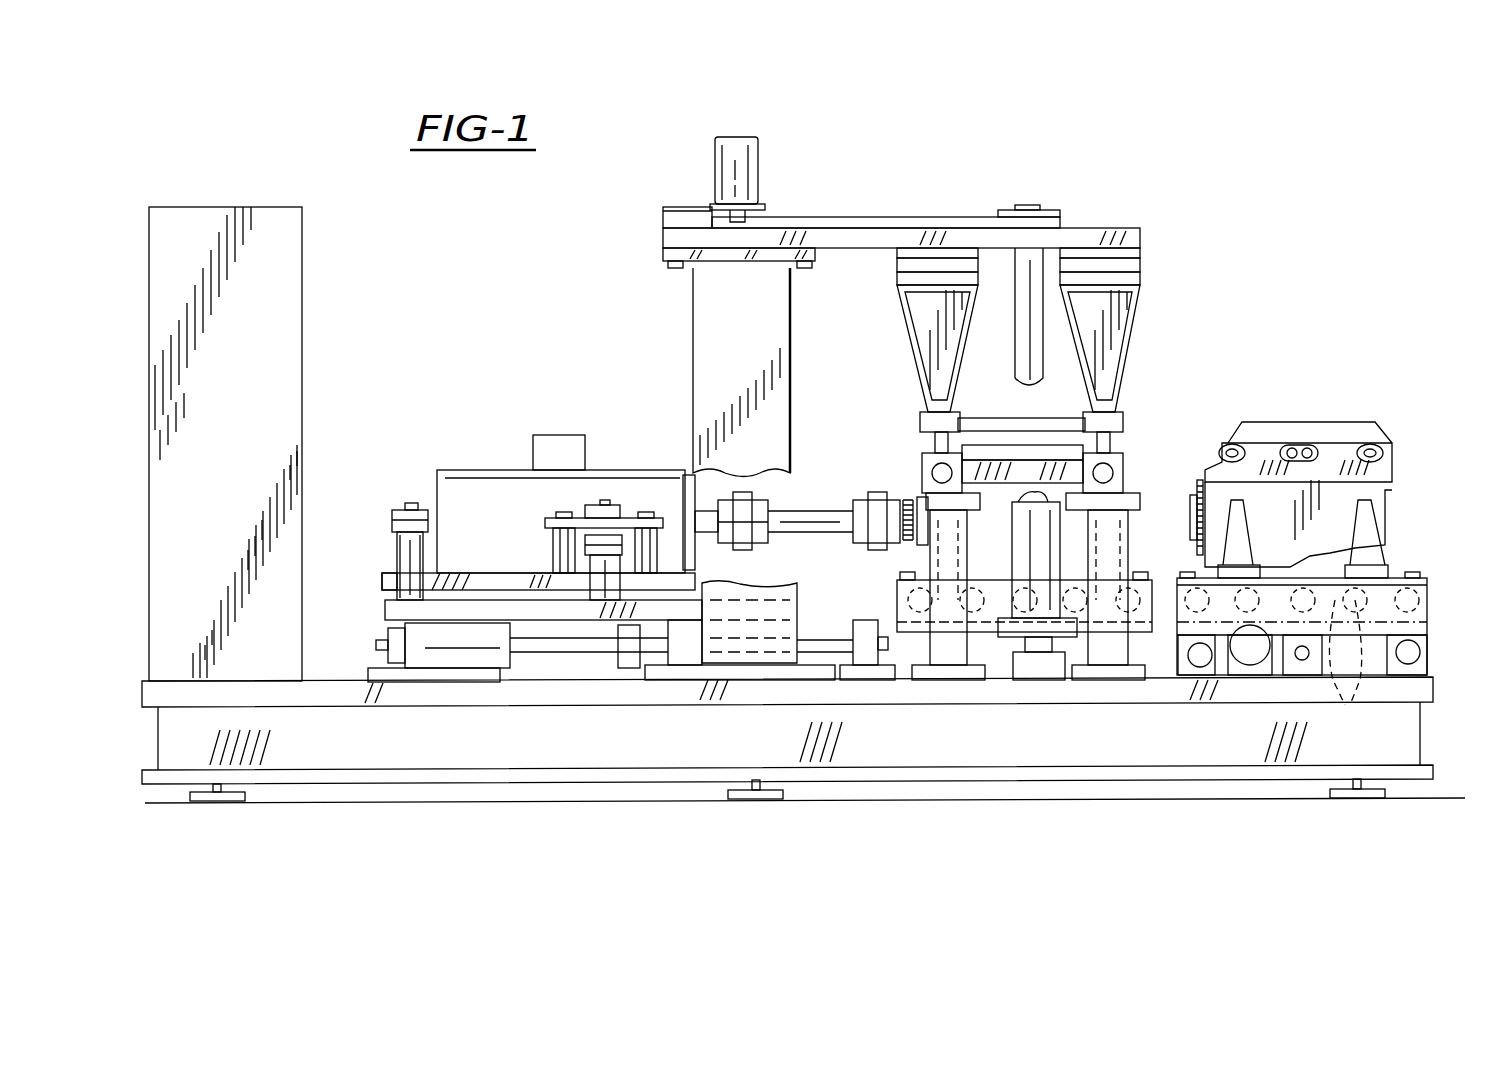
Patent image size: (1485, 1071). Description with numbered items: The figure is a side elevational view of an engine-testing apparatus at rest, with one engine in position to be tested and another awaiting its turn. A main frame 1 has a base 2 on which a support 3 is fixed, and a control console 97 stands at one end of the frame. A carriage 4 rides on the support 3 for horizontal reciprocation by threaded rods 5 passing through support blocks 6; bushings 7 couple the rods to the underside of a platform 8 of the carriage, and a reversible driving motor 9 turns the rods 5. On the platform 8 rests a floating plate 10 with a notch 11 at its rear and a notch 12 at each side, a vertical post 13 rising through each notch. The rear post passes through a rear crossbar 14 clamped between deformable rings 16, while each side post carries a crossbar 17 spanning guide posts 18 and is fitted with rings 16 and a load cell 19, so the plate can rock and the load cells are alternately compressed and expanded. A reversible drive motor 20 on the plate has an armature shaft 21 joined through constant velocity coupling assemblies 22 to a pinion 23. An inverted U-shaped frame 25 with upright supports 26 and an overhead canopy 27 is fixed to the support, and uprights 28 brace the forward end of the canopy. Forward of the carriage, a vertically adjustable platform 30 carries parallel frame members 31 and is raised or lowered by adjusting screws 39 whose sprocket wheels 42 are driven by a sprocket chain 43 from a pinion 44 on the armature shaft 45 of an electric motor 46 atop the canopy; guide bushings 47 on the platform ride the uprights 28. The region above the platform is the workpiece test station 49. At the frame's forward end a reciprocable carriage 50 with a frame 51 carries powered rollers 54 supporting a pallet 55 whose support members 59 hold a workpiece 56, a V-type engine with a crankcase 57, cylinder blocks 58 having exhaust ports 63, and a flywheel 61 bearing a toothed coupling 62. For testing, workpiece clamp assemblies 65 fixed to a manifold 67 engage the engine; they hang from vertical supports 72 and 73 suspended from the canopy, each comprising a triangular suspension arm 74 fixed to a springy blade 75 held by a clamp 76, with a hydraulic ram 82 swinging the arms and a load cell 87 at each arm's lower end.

The main frame 1 is at (440, 793).
The base 2 is at (1415, 750).
The support 3 is at (278, 705).
The carriage 4 is at (345, 566).
The threaded rods 5 is at (510, 665).
The support blocks 6 is at (860, 622).
The bushings 7 is at (690, 655).
The platform 8 is at (388, 603).
The reversible driving motor 9 is at (470, 655).
The floating plate 10 is at (465, 580).
The notch 11 is at (380, 580).
The notch 12 is at (628, 668).
The vertical post 13 is at (395, 545).
The rear crossbar 14 is at (412, 505).
The deformable rings 16 is at (395, 510).
The crossbar 17 is at (600, 500).
The guide posts 18 is at (540, 520).
The load cell 19 is at (555, 548).
The reversible electric drive motor 20 is at (480, 478).
The armature shaft 21 is at (712, 508).
The constant velocity coupling assemblies 22 is at (748, 545).
The pinion 23 is at (880, 545).
The inverted U-shaped frame 25 is at (865, 165).
The upright supports 26 is at (710, 362).
The overhead plate or canopy 27 is at (1092, 235).
The uprights 28 is at (1030, 498).
The vertically adjustable platform 30 is at (1140, 650).
The frame members 31 is at (1150, 610).
The adjusting screws 39 is at (1020, 250).
The sprocket wheel 42 is at (1040, 205).
The sprocket chain 43 is at (935, 215).
The pinion 44 is at (760, 222).
The armature shaft 45 is at (745, 200).
The electric motor 46 is at (745, 130).
The guide bushings 47 is at (1000, 650).
The workpiece test station 49 is at (1050, 400).
The reciprocable carriage 50 is at (1432, 606).
The frame 51 is at (1430, 635).
The powered rollers 54 is at (1353, 666).
The pallet 55 is at (1415, 575).
The workpiece 56 is at (1368, 430).
The crankcase 57 is at (1345, 533).
The cylinder blocks 58 is at (1395, 460).
The support members 59 is at (1240, 500).
The flywheel 61 is at (1200, 490).
The toothed coupling 62 is at (1195, 515).
The exhaust ports 63 is at (1308, 445).
The workpiece clamp assemblies 65 is at (905, 440).
The manifold 67 is at (1005, 445).
The vertical supports 72 is at (905, 335).
The vertical supports 73 is at (1150, 330).
The suspension arm 74 is at (895, 360).
The springy blade 75 is at (900, 268).
The clamp 76 is at (898, 255).
The hydraulic ram 82 is at (920, 465).
The load cell 87 is at (962, 412).
The control console 97 is at (290, 292).